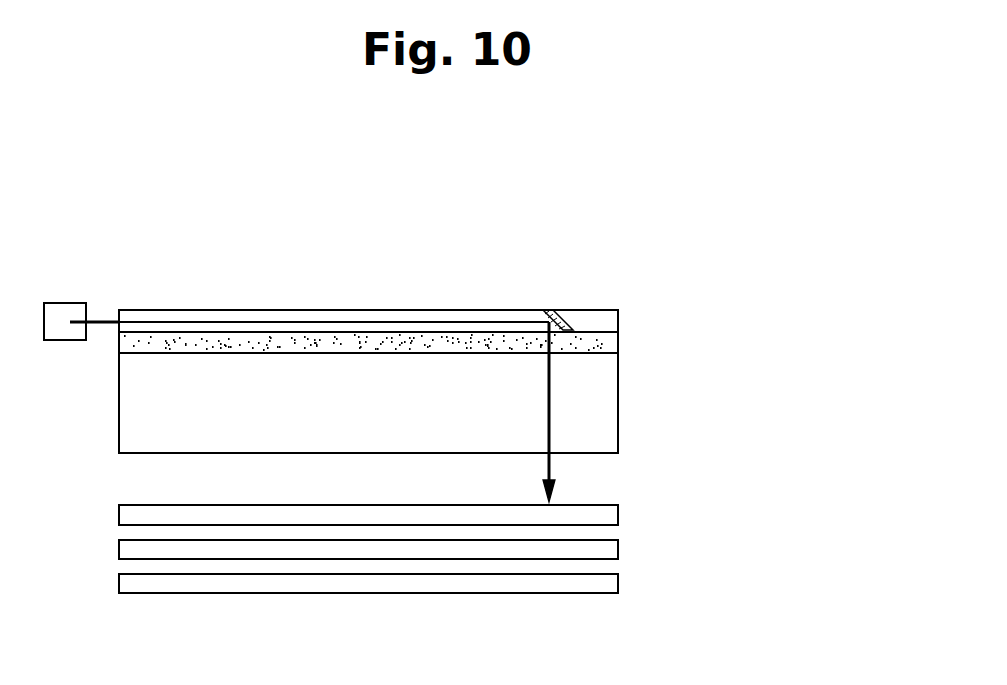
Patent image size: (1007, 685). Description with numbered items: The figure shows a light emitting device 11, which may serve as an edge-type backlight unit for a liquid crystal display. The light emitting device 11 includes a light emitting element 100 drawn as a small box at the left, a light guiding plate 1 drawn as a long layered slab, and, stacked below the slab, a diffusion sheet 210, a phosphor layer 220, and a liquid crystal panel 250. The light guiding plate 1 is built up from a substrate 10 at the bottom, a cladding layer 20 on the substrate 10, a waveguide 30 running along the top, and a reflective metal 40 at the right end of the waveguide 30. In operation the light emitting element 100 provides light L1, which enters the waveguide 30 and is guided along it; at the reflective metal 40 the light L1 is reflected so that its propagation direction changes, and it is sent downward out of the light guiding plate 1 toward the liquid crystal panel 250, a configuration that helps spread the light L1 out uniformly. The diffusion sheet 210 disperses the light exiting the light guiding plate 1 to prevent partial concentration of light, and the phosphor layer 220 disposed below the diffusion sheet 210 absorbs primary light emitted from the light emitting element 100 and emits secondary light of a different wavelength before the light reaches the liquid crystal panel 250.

The light guiding plate 1 is at (615, 313).
The substrate 10 is at (603, 393).
The cladding layer 20 is at (600, 337).
The waveguide 30 is at (449, 316).
The reflective metal 40 is at (566, 328).
The light emitting element 100 is at (65, 341).
The light L1 is at (553, 465).
The diffusion sheet 210 is at (604, 515).
The phosphor layer 220 is at (604, 549).
The liquid crystal panel 250 is at (604, 583).
The light emitting device 11 is at (728, 185).